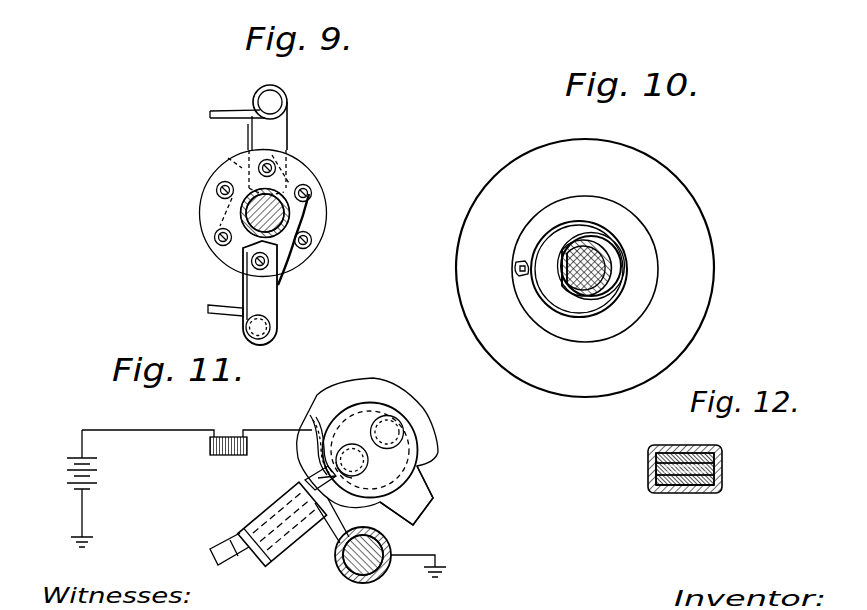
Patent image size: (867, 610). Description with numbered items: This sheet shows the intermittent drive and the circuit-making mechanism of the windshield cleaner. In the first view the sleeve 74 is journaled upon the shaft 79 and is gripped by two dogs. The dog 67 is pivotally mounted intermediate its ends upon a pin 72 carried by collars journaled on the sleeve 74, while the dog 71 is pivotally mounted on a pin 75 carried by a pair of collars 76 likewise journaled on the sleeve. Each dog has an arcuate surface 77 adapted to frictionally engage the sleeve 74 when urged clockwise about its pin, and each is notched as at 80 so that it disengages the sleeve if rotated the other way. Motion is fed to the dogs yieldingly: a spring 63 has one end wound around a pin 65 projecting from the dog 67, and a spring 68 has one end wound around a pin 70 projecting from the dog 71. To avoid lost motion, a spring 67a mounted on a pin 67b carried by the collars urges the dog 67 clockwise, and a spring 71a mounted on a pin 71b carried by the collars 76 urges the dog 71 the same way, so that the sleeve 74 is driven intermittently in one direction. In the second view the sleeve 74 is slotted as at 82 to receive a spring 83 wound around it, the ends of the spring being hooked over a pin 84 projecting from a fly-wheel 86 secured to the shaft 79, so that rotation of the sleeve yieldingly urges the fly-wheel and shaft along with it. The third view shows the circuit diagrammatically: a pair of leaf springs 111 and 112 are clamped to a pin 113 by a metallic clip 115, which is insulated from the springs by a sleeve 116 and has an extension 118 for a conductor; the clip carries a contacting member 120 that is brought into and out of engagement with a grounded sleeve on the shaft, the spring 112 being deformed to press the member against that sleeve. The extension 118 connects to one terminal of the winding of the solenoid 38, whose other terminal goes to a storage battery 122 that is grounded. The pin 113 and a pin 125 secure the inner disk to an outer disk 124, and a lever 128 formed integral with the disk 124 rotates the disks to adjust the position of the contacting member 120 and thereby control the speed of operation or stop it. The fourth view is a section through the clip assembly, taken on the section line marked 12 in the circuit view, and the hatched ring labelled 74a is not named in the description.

In FIG. 9, the spring 63 is at (220, 110).
In FIG. 9, the pin 65 is at (277, 95).
In FIG. 9, the dog 67 is at (290, 110).
In FIG. 9, the spring 67a is at (224, 210).
In FIG. 9, the pin 67b is at (216, 189).
In FIG. 9, the spring 68 is at (217, 313).
In FIG. 9, the pin 70 is at (244, 334).
In FIG. 9, the dog 71 is at (262, 300).
In FIG. 9, the spring 71a is at (304, 214).
In FIG. 9, the pin 71b is at (312, 240).
In FIG. 9, the pin 72 is at (290, 135).
In FIG. 9, the sleeve 74 is at (282, 197).
In FIG. 10, the sleeve 74 is at (589, 250).
In FIG. 11, the sleeve 74 is at (388, 577).
In FIG. 11, the shaft ring 74a is at (389, 548).
In FIG. 9, the pin 75 is at (246, 282).
In FIG. 9, the collars 76 is at (311, 189).
In FIG. 9, the arcuate surfaces 77 is at (272, 163).
In FIG. 9, the shaft 79 is at (243, 252).
In FIG. 10, the shaft 79 is at (614, 267).
In FIG. 9, the notches 80 is at (231, 163).
In FIG. 10, the slot 82 is at (560, 272).
In FIG. 10, the spring 83 is at (577, 317).
In FIG. 10, the pin 84 is at (516, 266).
In FIG. 10, the fly-wheel 86 is at (655, 175).
In FIG. 11, the section line 12 is at (260, 487).
In FIG. 11, the solenoid 38 is at (215, 457).
In FIG. 11, the leaf spring 111 is at (222, 551).
In FIG. 12, the leaf spring 111 is at (667, 490).
In FIG. 12, the leaf spring 112 is at (689, 452).
In FIG. 11, the pin 113 is at (306, 463).
In FIG. 11, the metallic clip 115 is at (264, 560).
In FIG. 12, the metallic clip 115 is at (726, 452).
In FIG. 12, the sleeve 116 is at (723, 466).
In FIG. 11, the extension 118 is at (311, 418).
In FIG. 11, the contacting member 120 is at (348, 572).
In FIG. 12, the contacting member 120 is at (698, 490).
In FIG. 11, the storage battery 122 is at (98, 468).
In FIG. 11, the disk 124 is at (390, 400).
In FIG. 11, the pin 125 is at (390, 432).
In FIG. 11, the lever 128 is at (434, 499).